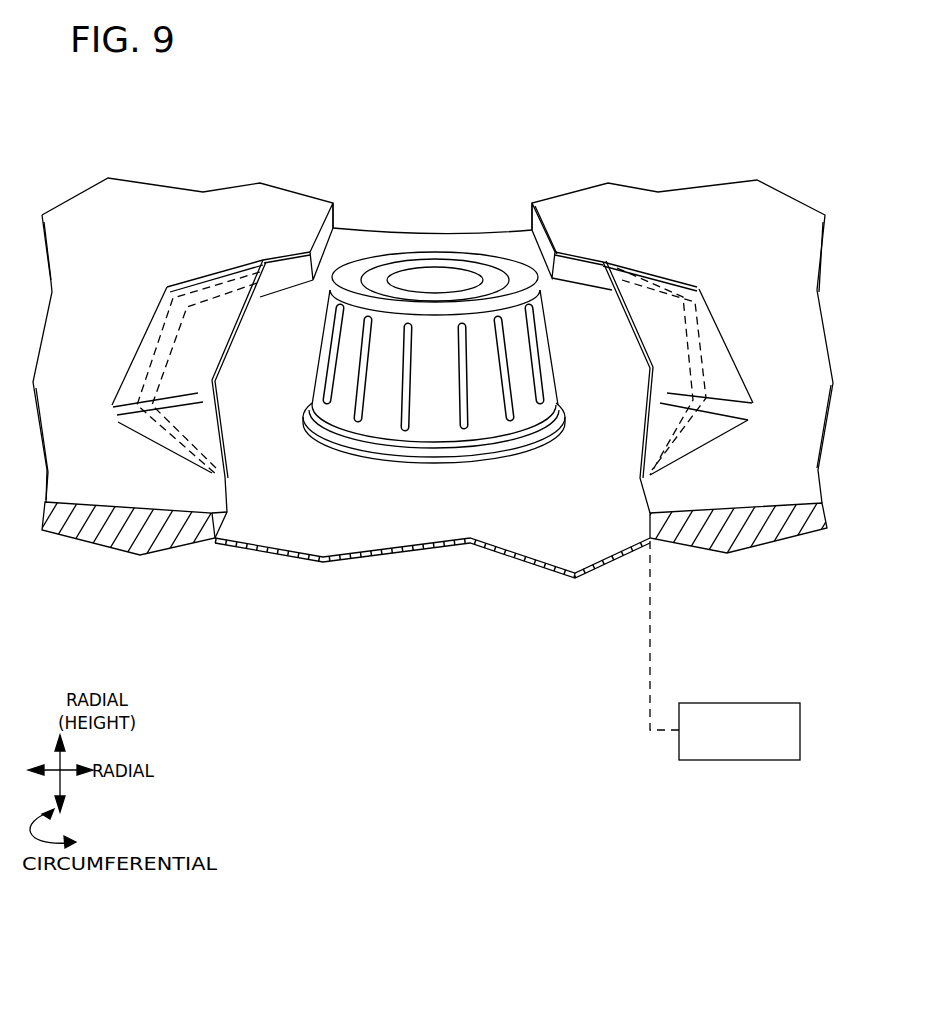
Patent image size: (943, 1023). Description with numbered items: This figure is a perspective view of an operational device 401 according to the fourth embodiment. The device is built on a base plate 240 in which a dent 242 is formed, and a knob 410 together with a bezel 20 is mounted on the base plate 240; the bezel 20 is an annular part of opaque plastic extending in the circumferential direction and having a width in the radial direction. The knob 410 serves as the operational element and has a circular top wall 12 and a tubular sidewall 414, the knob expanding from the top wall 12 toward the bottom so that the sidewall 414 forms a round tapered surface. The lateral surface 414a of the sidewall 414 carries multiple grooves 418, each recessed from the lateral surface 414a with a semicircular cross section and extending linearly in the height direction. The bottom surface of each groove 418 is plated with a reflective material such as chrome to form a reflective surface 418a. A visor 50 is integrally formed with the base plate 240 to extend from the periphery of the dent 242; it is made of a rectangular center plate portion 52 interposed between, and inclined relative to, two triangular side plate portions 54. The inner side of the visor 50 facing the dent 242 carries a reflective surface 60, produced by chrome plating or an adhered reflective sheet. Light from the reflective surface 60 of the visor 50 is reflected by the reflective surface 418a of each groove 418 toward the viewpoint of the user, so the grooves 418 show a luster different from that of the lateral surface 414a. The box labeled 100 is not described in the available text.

The operational device 401 is at (550, 97).
The base plate 240 is at (642, 170).
The visor 50 is at (715, 278).
The dent 242 is at (641, 311).
The reflective surface 60 is at (263, 295).
The side plate portions 54 is at (204, 277).
The center plate portion 52 is at (184, 350).
The top wall 12 is at (358, 272).
The knob 410 is at (421, 348).
The sidewall 414 is at (325, 358).
The lateral surface 414a is at (259, 377).
The grooves 418 is at (513, 410).
The reflective surface 418a is at (464, 425).
The bezel 20 is at (522, 458).
The ECU 100 is at (752, 762).